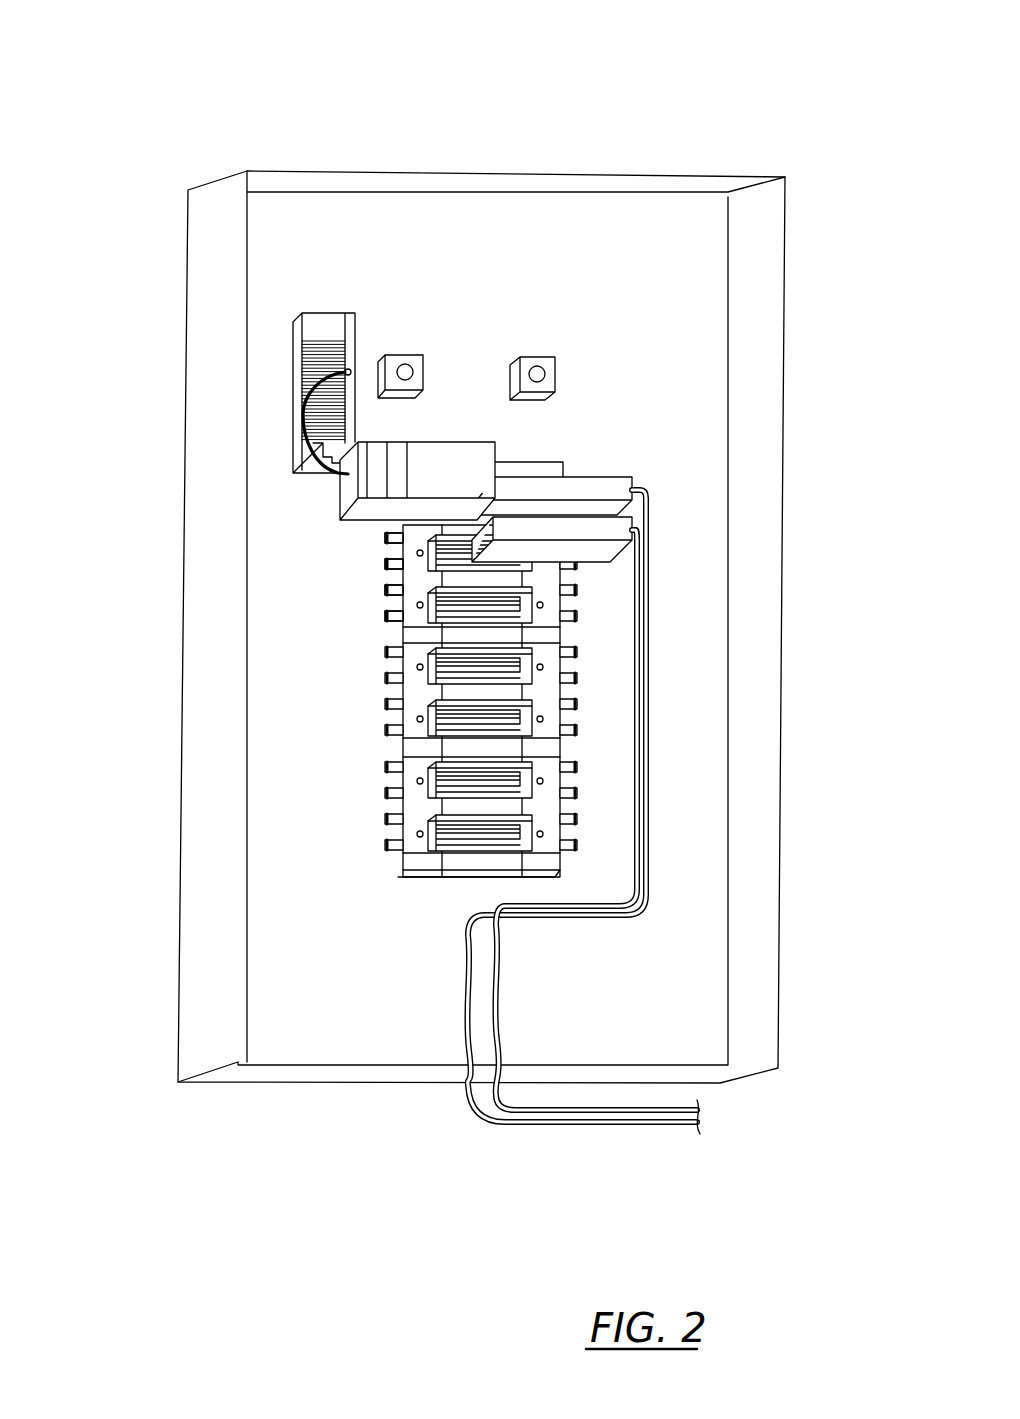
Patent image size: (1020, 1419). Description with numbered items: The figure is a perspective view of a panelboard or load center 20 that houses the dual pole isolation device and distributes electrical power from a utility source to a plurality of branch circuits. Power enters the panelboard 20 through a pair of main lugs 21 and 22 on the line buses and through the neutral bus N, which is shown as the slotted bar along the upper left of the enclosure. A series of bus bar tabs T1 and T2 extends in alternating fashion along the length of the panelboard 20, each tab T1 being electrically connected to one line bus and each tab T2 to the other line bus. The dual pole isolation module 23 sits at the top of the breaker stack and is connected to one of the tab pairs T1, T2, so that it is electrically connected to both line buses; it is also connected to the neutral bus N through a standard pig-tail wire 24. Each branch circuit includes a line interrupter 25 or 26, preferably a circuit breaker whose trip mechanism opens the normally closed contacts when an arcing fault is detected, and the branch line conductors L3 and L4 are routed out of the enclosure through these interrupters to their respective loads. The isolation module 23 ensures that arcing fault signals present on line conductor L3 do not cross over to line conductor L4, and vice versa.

The panelboard 20 is at (538, 104).
The neutral bus N is at (350, 325).
The main lug 21 is at (405, 364).
The main lug 22 is at (537, 366).
The dual pole isolation module 23 is at (392, 470).
The pig-tail wire 24 is at (300, 436).
The line interrupter 25 is at (612, 483).
The line interrupter 26 is at (590, 528).
The line conductor L3 is at (652, 507).
The line conductor L4 is at (633, 693).
The bus bar tab T1 is at (386, 590).
The bus bar tab T2 is at (386, 616).